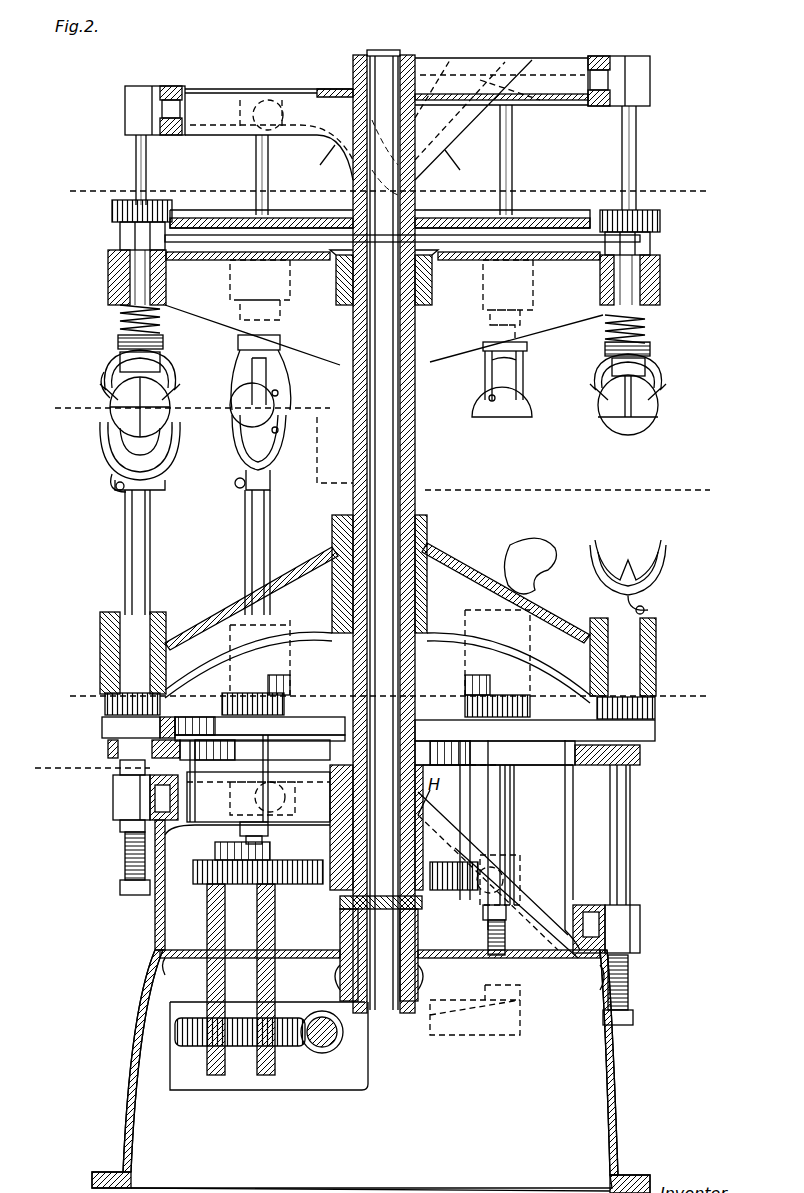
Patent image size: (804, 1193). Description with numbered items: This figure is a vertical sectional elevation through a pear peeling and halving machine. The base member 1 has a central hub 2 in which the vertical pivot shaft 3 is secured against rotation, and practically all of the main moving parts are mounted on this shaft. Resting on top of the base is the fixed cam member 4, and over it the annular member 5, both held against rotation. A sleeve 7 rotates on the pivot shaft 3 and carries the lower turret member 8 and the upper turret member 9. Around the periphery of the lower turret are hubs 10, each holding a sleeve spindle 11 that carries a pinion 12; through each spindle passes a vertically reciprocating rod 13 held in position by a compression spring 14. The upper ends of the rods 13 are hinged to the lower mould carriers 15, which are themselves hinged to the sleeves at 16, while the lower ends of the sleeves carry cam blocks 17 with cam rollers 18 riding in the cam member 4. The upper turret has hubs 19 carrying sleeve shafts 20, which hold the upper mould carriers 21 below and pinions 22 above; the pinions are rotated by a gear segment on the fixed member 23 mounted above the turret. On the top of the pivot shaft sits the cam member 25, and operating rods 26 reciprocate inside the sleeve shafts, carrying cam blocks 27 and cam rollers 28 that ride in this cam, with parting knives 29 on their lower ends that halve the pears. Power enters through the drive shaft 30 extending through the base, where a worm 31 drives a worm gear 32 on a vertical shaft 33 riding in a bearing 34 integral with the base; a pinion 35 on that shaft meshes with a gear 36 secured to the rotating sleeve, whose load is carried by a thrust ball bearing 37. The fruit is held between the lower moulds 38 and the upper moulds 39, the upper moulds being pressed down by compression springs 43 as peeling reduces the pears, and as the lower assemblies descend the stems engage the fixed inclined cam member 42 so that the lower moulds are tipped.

The base member 1 is at (615, 1092).
The central hub 2 is at (418, 934).
The pivot shaft 3 is at (398, 440).
The fixed cam member 4 is at (528, 875).
The annular member 5 is at (532, 757).
The sleeve 7 is at (400, 505).
The turret member 8 is at (430, 575).
The upper turret member 9 is at (447, 340).
The hubs 10 is at (112, 640).
The sleeve spindle 11 is at (130, 565).
The pinions 12 is at (108, 710).
The vertically reciprocating rods 13 is at (125, 860).
The compression springs 14 is at (122, 885).
The lower mould carriers 15 is at (100, 450).
The hinge 16 is at (116, 486).
The cam blocks 17 is at (125, 795).
The cam rollers 18 is at (162, 800).
The hubs 19 is at (108, 272).
The sleeve shafts 20 is at (125, 318).
The upper mould carriers 21 is at (158, 366).
The pinions 22 is at (112, 212).
The member 23 is at (538, 215).
The cam member 25 is at (568, 72).
The operating rods 26 is at (142, 162).
The cam blocks 27 is at (145, 104).
The cam rollers 28 is at (172, 100).
The parting knives 29 is at (104, 375).
The drive shaft 30 is at (328, 1046).
The worm 31 is at (345, 1032).
The worm gear 32 is at (175, 1032).
The vertical shaft 33 is at (240, 962).
The bearing 34 is at (272, 928).
The pinion 35 is at (208, 872).
The gear 36 is at (332, 868).
The thrust ball bearing 37 is at (340, 904).
The lower moulds 38 is at (150, 425).
The upper moulds 39 is at (152, 405).
The fixed inclined cam member 42 is at (475, 1010).
The compression springs 43 is at (118, 338).